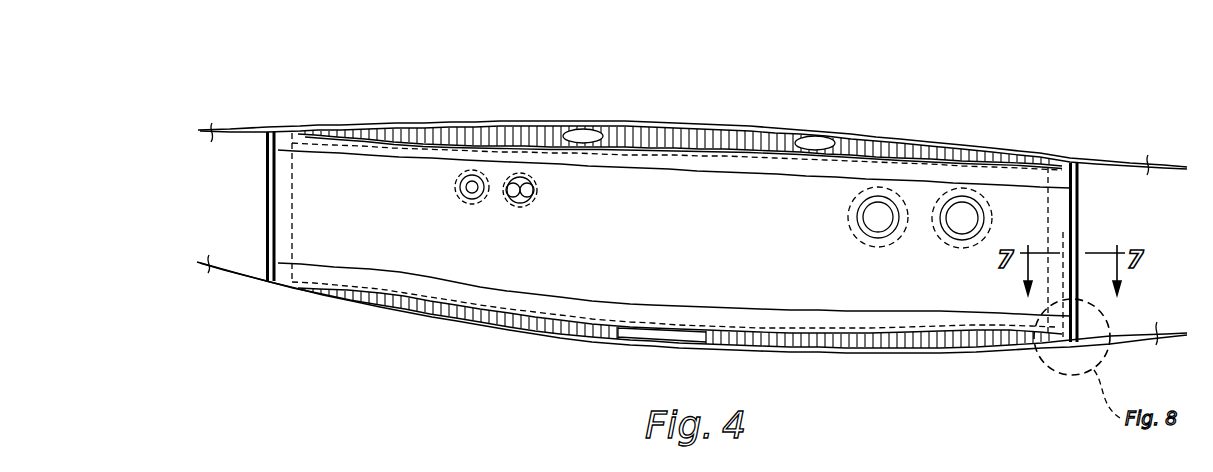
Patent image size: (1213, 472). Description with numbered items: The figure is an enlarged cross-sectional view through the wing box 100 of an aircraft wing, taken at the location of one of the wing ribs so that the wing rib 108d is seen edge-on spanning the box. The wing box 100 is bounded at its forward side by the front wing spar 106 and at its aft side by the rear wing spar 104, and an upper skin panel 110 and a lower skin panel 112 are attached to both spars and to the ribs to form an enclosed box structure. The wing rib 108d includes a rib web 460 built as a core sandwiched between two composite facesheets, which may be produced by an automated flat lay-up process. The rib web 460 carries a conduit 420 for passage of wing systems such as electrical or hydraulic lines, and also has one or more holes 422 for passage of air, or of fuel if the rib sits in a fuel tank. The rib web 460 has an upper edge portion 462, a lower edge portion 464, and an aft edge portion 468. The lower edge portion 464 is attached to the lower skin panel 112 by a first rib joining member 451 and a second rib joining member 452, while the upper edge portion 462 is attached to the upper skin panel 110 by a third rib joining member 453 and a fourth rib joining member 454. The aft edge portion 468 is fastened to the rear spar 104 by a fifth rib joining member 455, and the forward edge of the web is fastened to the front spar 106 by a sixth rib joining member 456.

The wing box 100 is at (224, 76).
The rear wing spar 104 is at (1073, 205).
The front wing spar 106 is at (268, 216).
The wing rib 108d is at (685, 193).
The upper skin panel 110 is at (907, 140).
The lower skin panel 112 is at (447, 322).
The conduit 420 is at (532, 205).
The holes 422 is at (938, 230).
The first rib joining member 451 is at (803, 320).
The second rib joining member 452 is at (813, 320).
The third rib joining member 453 is at (757, 163).
The fourth rib joining member 454 is at (788, 167).
The fifth rib joining member 455 is at (1077, 226).
The sixth rib joining member 456 is at (285, 172).
The rib web 460 is at (807, 203).
The upper edge portion 462 is at (970, 177).
The lower edge portion 464 is at (860, 322).
The aft edge portion 468 is at (1063, 337).